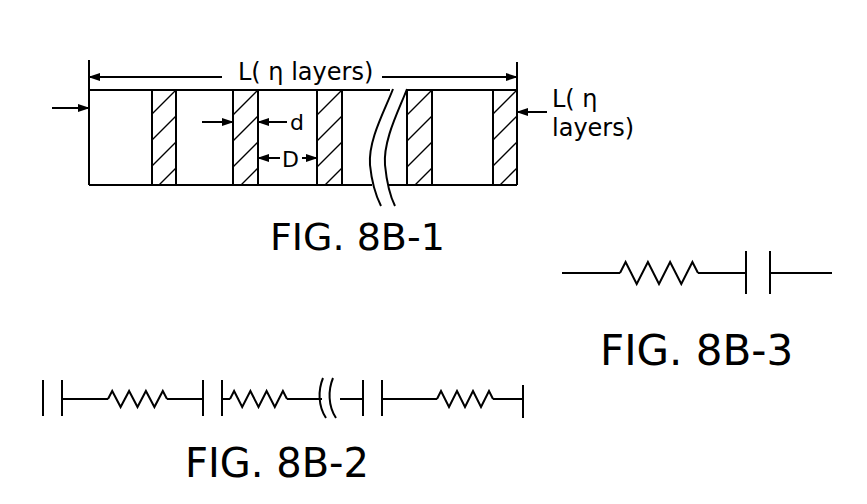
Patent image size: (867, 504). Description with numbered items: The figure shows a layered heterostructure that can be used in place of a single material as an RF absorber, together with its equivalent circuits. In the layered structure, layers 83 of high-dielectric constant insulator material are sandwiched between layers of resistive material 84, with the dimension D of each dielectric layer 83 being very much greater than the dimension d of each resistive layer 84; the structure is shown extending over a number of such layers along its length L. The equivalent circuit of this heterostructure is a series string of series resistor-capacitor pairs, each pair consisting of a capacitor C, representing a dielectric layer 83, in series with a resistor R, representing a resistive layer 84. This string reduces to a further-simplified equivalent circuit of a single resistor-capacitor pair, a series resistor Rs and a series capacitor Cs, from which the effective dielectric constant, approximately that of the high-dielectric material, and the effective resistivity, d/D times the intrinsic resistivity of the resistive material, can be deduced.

In FIG. 8B-1, the layers of high-dielectric constant insulator material 83 is at (135, 173).
In FIG. 8B-1, the layers of resistive material 84 is at (170, 182).
In FIG. 8B-2, the capacitor C is at (373, 383).
In FIG. 8B-2, the resistor R is at (483, 396).
In FIG. 8B-3, the series resistor Rs is at (659, 290).
In FIG. 8B-3, the series capacitor Cs is at (781, 279).